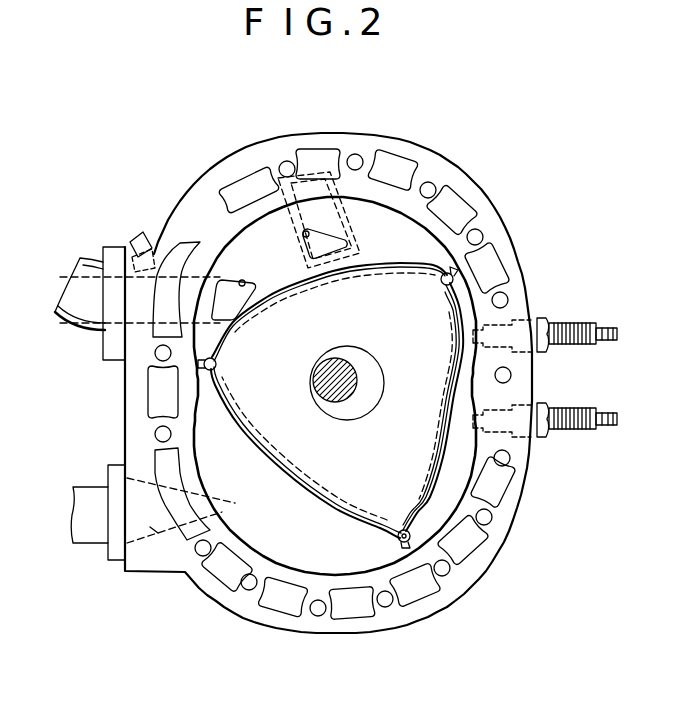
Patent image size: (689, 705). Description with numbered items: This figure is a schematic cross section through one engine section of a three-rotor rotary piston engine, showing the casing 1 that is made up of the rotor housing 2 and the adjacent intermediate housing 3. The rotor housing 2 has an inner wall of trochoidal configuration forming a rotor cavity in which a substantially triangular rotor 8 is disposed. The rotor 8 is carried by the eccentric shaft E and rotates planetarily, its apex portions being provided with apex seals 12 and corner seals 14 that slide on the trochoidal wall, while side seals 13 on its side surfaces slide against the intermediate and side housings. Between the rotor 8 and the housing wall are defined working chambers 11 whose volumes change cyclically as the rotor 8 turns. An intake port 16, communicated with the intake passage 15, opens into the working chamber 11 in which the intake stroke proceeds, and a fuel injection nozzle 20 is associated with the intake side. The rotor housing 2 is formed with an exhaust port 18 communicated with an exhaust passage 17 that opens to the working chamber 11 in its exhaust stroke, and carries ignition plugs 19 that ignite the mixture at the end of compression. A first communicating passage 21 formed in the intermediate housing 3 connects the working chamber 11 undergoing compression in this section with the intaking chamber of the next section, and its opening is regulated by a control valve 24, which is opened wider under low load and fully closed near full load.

The casing 1 is at (471, 166).
The rotor housing 2 is at (480, 222).
The intermediate housing 3 is at (380, 218).
The rotor 8 is at (347, 510).
The working chamber 11 is at (400, 253).
The apex seal 12 is at (398, 540).
The side seal 13 is at (367, 520).
The corner seal 14 is at (405, 529).
The intake passage 15 is at (68, 328).
The intake port 16 is at (243, 282).
The exhaust passage 17 is at (93, 498).
The exhaust port 18 is at (157, 530).
The ignition plug 19 is at (594, 343).
The fuel injection nozzle 20 is at (147, 231).
The first communicating passage 21 is at (303, 235).
The control valve 24 is at (371, 205).
The eccentric shaft E is at (345, 403).